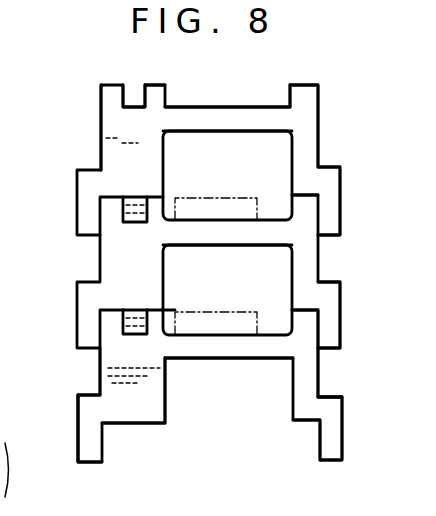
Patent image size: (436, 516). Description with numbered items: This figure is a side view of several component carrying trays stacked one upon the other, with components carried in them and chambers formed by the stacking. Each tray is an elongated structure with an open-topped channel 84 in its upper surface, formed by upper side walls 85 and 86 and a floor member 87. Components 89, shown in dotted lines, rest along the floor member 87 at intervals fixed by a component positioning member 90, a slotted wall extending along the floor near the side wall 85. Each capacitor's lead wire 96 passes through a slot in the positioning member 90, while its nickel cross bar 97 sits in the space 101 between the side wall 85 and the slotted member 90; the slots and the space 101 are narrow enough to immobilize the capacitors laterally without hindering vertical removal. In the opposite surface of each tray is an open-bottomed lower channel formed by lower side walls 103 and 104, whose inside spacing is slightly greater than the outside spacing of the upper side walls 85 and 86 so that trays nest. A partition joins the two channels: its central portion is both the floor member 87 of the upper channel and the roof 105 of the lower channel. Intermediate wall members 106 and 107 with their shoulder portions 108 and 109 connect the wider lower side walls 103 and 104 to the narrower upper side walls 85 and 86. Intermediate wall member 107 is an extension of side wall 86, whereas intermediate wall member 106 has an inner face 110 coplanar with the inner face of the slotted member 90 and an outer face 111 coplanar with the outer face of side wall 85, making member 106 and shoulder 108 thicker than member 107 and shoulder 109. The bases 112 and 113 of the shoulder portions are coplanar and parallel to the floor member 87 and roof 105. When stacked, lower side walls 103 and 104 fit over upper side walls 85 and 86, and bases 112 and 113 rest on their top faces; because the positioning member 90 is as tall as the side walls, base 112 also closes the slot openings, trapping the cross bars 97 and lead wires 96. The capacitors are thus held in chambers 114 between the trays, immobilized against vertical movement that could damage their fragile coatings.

The open-topped channel 84 is at (214, 103).
The side wall 85 is at (100, 87).
The side wall 86 is at (308, 92).
The floor member 87 is at (263, 103).
The components 89 is at (243, 200).
The component positioning member 90 is at (154, 88).
The lead wire 96 is at (172, 308).
The cross bar 97 is at (16, 479).
The space 101 is at (137, 94).
The lower side wall 103 is at (78, 228).
The lower side wall 104 is at (339, 210).
The roof 105 is at (253, 132).
The intermediate wall member 106 is at (110, 358).
The intermediate wall member 107 is at (300, 362).
The shoulder portion 108 is at (77, 397).
The shoulder portion 109 is at (328, 394).
The inner face 110 is at (168, 396).
The outer face 111 is at (103, 377).
The base 112 is at (133, 427).
The base 113 is at (306, 430).
The chambers 114 is at (172, 182).